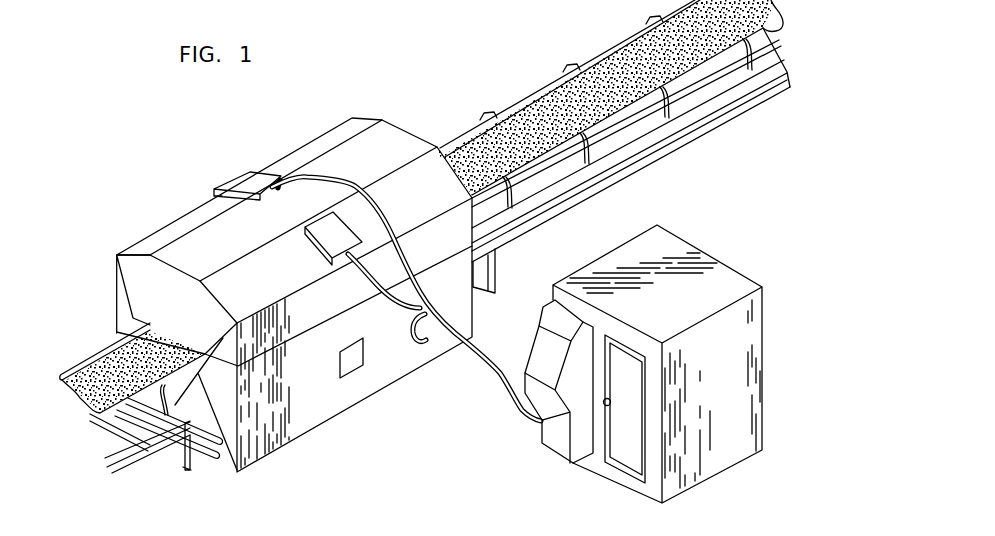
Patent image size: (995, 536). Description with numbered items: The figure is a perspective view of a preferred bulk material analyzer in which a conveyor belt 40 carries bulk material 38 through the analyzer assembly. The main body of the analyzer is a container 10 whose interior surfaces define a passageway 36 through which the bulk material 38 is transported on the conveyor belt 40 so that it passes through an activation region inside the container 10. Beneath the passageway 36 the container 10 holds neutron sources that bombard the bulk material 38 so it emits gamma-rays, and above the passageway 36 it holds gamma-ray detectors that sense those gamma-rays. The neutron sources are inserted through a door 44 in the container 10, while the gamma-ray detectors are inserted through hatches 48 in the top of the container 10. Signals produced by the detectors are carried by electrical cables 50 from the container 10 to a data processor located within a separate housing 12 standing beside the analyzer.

The container 10 is at (348, 143).
The housing 12 is at (697, 270).
The passageway 36 is at (114, 322).
The bulk material 38 is at (62, 375).
The conveyor belt 40 is at (100, 356).
The door 44 is at (348, 360).
The hatches 48 is at (242, 180).
The electrical cables 50 is at (418, 340).